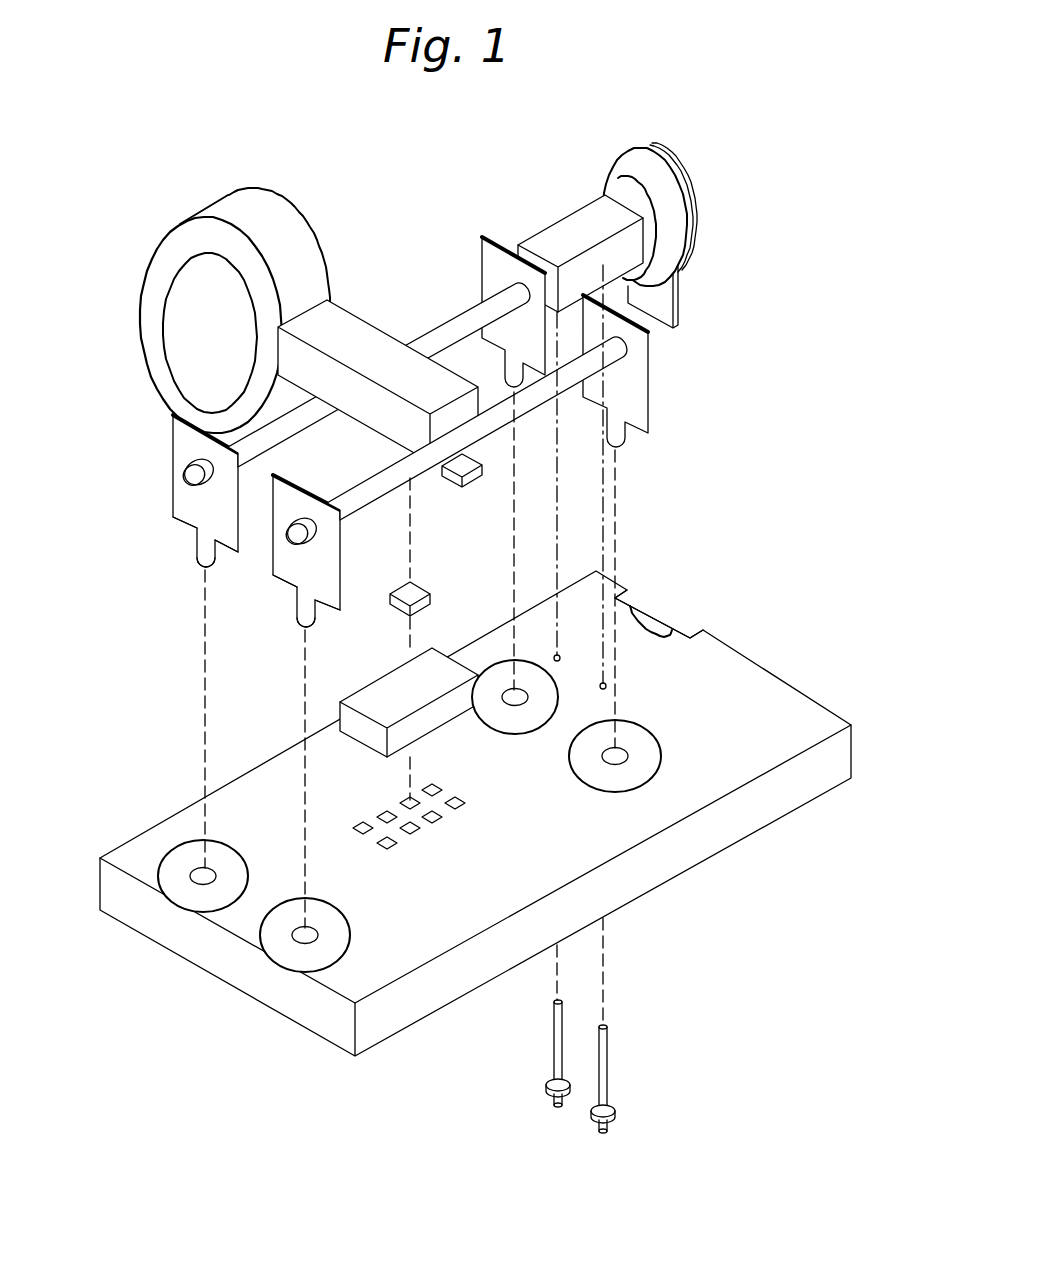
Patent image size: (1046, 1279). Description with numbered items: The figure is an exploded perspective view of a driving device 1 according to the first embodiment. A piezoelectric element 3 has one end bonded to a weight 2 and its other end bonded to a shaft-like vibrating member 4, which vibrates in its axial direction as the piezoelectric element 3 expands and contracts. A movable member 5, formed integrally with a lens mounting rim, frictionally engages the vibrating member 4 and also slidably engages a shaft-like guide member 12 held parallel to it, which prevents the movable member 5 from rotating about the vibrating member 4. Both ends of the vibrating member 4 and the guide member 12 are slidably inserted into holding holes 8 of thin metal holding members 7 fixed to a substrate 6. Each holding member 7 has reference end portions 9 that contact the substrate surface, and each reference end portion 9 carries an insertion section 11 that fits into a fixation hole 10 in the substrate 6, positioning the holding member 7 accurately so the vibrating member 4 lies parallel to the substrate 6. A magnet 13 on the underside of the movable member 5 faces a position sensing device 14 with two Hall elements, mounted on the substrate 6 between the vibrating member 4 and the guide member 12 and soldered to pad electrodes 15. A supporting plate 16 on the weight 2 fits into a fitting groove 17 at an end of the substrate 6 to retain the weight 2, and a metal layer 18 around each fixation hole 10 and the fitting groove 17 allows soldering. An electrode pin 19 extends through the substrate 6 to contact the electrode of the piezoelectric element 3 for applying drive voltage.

The driving device 1 is at (402, 176).
The weight 2 is at (638, 178).
The piezoelectric element 3 is at (569, 232).
The vibrating member 4 is at (454, 325).
The movable member 5 is at (371, 340).
The substrate 6 is at (760, 695).
The holding member 7 is at (500, 245).
The holding hole 8 is at (184, 462).
The reference end portion 9 is at (182, 528).
The fixation hole 10 is at (520, 688).
The insertion section 11 is at (194, 558).
The guide member 12 is at (400, 497).
The magnet 13 is at (420, 584).
The position sensing device 14 is at (437, 677).
The pad electrode 15 is at (362, 822).
The supporting plate 16 is at (680, 316).
The fitting groove 17 is at (686, 634).
The metal layer 18 is at (498, 675).
The electrode pin 19 is at (550, 1060).